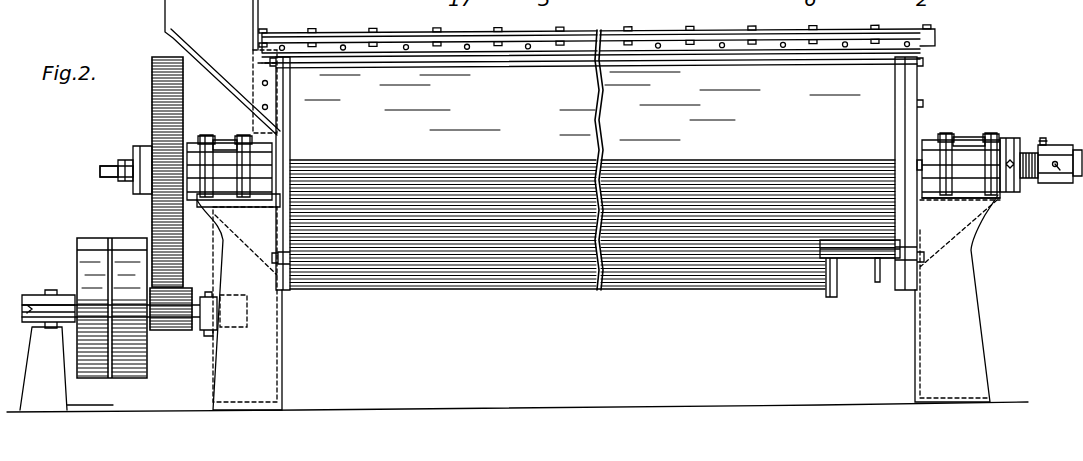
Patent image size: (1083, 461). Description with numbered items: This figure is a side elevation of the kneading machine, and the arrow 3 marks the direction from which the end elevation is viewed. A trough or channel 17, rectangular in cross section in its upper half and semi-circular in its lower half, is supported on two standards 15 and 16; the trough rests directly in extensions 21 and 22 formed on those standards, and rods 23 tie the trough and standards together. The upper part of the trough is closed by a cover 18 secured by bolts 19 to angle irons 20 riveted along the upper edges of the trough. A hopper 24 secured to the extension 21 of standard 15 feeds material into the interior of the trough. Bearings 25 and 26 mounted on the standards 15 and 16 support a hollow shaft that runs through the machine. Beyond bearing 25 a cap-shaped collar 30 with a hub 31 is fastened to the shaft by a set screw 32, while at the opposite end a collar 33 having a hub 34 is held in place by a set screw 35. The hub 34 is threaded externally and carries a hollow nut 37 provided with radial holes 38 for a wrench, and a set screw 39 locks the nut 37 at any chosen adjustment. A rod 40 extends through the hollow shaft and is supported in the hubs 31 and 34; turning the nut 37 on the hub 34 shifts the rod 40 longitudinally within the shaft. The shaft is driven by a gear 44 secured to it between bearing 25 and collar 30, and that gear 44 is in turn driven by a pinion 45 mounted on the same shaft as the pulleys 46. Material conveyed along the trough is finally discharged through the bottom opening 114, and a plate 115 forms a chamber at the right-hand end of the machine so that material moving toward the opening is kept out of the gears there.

The direction of end elevation 3 is at (86, 124).
The standard 15 is at (282, 372).
The standard 16 is at (984, 340).
The trough 17 is at (592, 160).
The cover 18 is at (722, 33).
The bolts 19 is at (688, 33).
The angle irons 20 is at (262, 47).
The extension 21 is at (296, 194).
The extension 22 is at (893, 118).
The rods 23 is at (511, 66).
The hopper 24 is at (222, 67).
The bearing 25 is at (218, 146).
The bearing 26 is at (972, 144).
The collar 30 is at (140, 196).
The hub 31 is at (128, 180).
The set screw 32 is at (130, 164).
The collar 33 is at (1015, 140).
The hub 34 is at (1028, 188).
The set screw 35 is at (1005, 198).
The hollow nut 37 is at (1045, 192).
The radial holes 38 is at (1050, 176).
The set screw 39 is at (1060, 138).
The rod 40 is at (112, 166).
The gear 44 is at (152, 90).
The pinion 45 is at (171, 332).
The pulleys 46 is at (126, 376).
The bottom opening 114 is at (844, 282).
The plate 115 is at (870, 285).